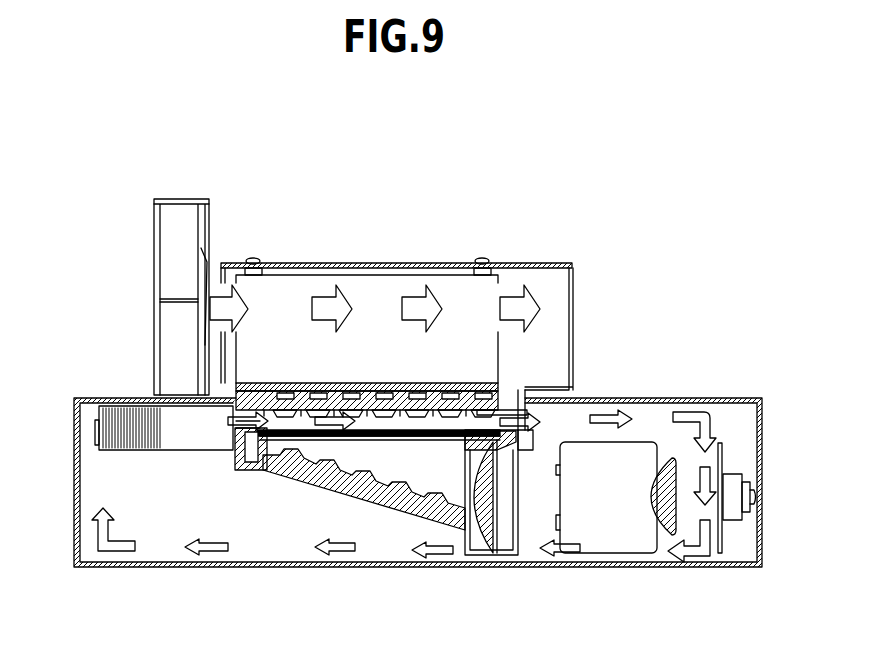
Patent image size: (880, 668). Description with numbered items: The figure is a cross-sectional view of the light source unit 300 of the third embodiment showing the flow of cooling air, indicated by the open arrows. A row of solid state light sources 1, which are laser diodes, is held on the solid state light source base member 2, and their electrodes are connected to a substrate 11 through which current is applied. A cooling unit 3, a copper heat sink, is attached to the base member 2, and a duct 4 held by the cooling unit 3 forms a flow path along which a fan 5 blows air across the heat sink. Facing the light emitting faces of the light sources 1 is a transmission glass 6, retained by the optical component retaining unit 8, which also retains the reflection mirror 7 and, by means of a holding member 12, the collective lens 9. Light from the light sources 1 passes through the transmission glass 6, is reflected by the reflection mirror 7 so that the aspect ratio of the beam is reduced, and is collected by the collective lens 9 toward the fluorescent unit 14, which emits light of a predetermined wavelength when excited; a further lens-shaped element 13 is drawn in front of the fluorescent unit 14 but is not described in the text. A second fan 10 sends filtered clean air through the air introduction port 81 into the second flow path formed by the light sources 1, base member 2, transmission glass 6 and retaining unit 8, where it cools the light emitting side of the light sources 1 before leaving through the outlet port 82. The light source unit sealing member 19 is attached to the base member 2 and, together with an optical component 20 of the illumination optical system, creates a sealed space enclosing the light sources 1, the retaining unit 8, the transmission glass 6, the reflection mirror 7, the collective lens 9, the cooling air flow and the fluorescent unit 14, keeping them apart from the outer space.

The light source unit 300 is at (102, 143).
The solid state light sources 1 is at (270, 440).
The solid state light source base member 2 is at (234, 394).
The cooling unit 3 is at (380, 292).
The duct 4 is at (550, 291).
The fan 5 is at (173, 250).
The transmission glass 6 is at (435, 438).
The reflection mirror 7 is at (355, 478).
The optical component retaining unit 8 is at (318, 445).
The collective lens 9 is at (478, 557).
The fan 10 is at (97, 445).
The substrate 11 is at (272, 382).
The holding member 12 is at (503, 557).
The imaging lens 13 is at (667, 537).
The fluorescent unit 14 is at (735, 474).
The light source unit sealing member 19 is at (75, 526).
The optical component 20 is at (605, 523).
The air introduction port 81 is at (250, 431).
The outlet port 82 is at (520, 407).